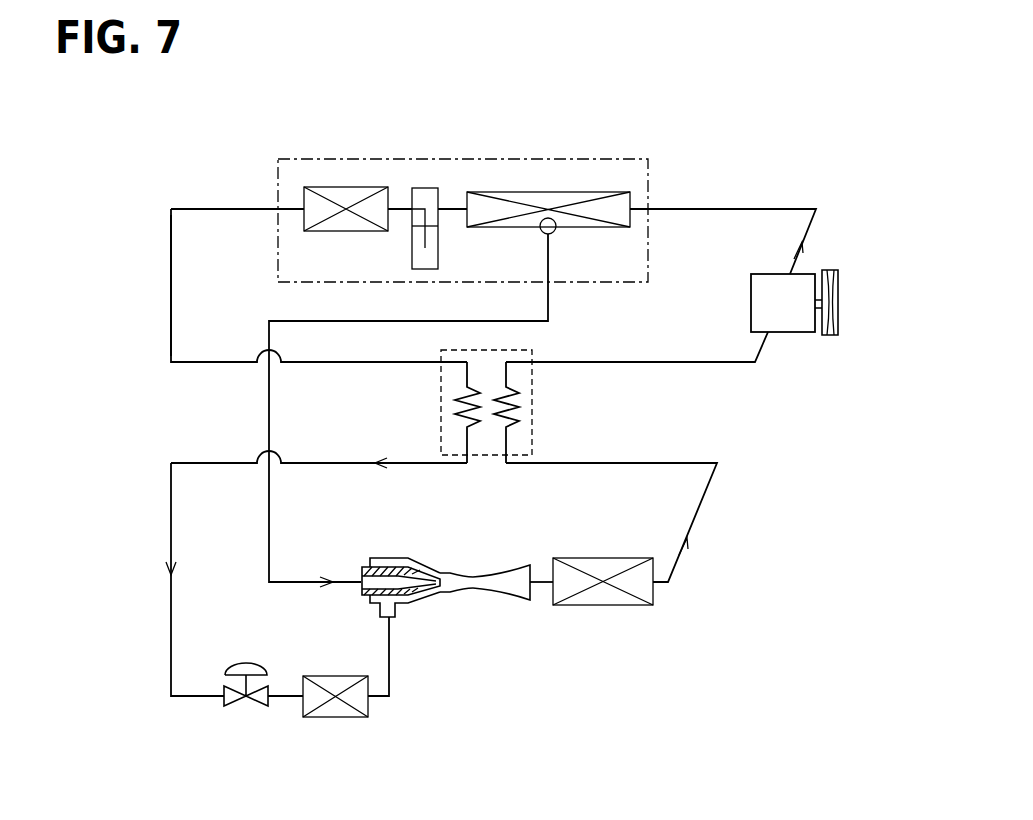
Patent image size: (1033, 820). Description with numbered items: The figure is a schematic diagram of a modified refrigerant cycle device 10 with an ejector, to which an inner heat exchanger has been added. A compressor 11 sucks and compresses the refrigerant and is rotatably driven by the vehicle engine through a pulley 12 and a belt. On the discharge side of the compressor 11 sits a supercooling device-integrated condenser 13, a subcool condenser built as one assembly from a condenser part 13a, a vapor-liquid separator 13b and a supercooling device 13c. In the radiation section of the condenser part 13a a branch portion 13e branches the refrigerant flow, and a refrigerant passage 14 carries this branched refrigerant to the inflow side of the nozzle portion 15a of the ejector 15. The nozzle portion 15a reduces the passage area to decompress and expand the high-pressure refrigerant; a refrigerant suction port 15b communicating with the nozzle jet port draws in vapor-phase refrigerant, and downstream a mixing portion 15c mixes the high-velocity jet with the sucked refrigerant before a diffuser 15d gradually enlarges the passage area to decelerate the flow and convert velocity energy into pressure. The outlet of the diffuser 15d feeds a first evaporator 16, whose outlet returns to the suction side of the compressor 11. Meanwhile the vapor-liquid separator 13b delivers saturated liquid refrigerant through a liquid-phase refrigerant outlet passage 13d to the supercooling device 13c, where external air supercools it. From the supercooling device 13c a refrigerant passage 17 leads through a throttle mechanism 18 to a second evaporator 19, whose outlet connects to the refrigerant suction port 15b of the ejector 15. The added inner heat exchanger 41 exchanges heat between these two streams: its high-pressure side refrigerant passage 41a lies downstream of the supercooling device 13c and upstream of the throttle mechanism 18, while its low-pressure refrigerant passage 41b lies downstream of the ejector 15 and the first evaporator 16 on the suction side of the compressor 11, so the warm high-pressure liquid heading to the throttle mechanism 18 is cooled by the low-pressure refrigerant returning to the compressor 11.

The refrigerant cycle device 10 is at (699, 207).
The compressor 11 is at (794, 272).
The pulley 12 is at (838, 305).
The supercooling device-integrated condenser 13 is at (611, 152).
The condenser part 13a is at (560, 192).
The vapor-liquid separator 13b is at (433, 187).
The supercooling device 13c is at (343, 187).
The liquid-phase refrigerant outlet passage 13d is at (420, 187).
The branch portion 13e is at (553, 233).
The refrigerant passage 14 is at (290, 321).
The ejector 15 is at (463, 608).
The nozzle portion 15a is at (418, 567).
The refrigerant suction port 15b is at (398, 612).
The mixing portion 15c is at (457, 582).
The diffuser 15d is at (510, 588).
The first evaporator 16 is at (653, 594).
The refrigerant passage 17 is at (171, 272).
The throttle mechanism 18 is at (236, 706).
The second evaporator 19 is at (346, 717).
The inner heat exchanger 41 is at (441, 432).
The high-pressure side refrigerant passage 41a is at (460, 403).
The low-pressure refrigerant passage 41b is at (513, 396).